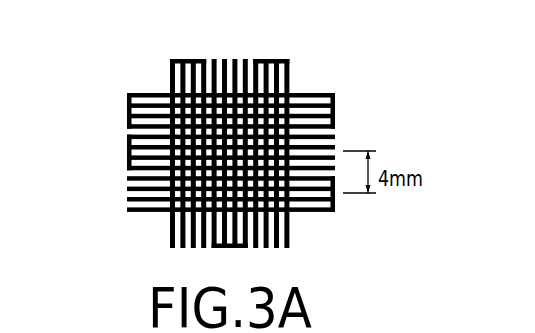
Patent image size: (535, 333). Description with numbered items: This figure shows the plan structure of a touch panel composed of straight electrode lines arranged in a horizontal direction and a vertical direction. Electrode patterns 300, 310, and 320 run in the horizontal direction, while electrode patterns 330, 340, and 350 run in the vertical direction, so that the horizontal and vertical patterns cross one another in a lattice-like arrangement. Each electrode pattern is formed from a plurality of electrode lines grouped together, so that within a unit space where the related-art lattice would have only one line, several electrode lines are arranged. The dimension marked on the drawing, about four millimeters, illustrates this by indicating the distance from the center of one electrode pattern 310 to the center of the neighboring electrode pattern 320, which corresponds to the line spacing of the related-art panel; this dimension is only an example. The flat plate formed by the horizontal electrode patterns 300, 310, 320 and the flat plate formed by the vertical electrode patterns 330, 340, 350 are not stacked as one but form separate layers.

The electrode pattern 300 is at (125, 90).
The electrode pattern 310 is at (125, 132).
The electrode pattern 320 is at (125, 174).
The electrode pattern 330 is at (207, 53).
The electrode pattern 340 is at (249, 53).
The electrode pattern 350 is at (291, 53).